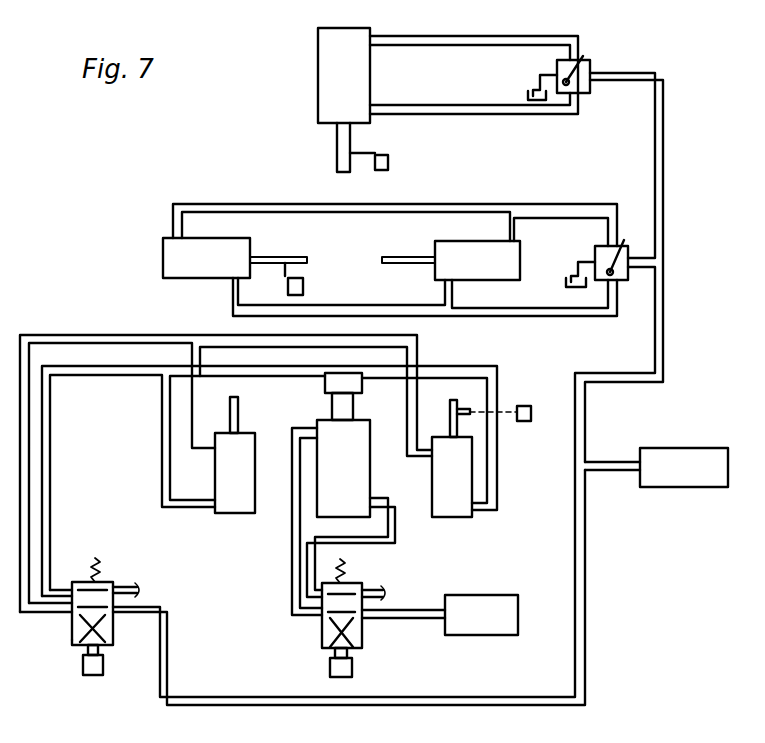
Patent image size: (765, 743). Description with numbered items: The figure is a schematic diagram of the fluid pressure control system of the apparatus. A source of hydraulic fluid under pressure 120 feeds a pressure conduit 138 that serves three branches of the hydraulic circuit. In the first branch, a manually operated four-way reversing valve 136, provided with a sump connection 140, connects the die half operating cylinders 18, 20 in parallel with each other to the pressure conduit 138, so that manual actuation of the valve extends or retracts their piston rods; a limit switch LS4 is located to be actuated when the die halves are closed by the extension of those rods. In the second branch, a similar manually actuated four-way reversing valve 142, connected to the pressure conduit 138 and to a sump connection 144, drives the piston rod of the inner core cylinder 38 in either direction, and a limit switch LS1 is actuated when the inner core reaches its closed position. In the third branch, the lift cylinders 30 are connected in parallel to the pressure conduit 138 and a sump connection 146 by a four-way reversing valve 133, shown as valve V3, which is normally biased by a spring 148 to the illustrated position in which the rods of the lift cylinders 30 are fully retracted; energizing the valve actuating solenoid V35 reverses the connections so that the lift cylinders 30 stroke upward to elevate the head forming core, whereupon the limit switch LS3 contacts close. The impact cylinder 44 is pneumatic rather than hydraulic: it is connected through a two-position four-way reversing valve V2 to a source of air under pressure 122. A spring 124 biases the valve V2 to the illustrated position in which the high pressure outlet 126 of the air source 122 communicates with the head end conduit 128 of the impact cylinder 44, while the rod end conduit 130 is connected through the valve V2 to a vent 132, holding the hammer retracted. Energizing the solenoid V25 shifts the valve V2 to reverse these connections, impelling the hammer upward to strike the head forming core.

The inner core cylinder 38 is at (317, 72).
The limit switch LS1 is at (390, 163).
The four-way reversing valve 142 is at (592, 66).
The sump connection 144 is at (528, 79).
The pressure conduit 138 is at (664, 228).
The source of hydraulic fluid 120 is at (683, 490).
The die half operating cylinder 18 is at (172, 282).
The limit switch LS4 is at (305, 287).
The die half operating cylinder 20 is at (506, 283).
The four-way reversing valve 136 is at (621, 283).
The sump connection 140 is at (583, 258).
The lift cylinder 30 is at (343, 457).
The limit switch LS3 is at (533, 413).
The impact cylinder 44 is at (343, 445).
The head end conduit 128 is at (287, 545).
The rod end conduit 130 is at (396, 536).
The four-way reversing valve V2 is at (356, 615).
The spring 124 is at (348, 566).
The vent 132 is at (390, 589).
The solenoid V25 is at (354, 667).
The high pressure outlet 126 is at (416, 621).
The source of air under pressure 122 is at (519, 630).
The four-way reversing valve V3 is at (76, 614).
The spring 148 is at (102, 561).
The sump connection 146 is at (144, 588).
The four-way reversing valve 133 is at (72, 639).
The valve actuating solenoid V35 is at (105, 665).